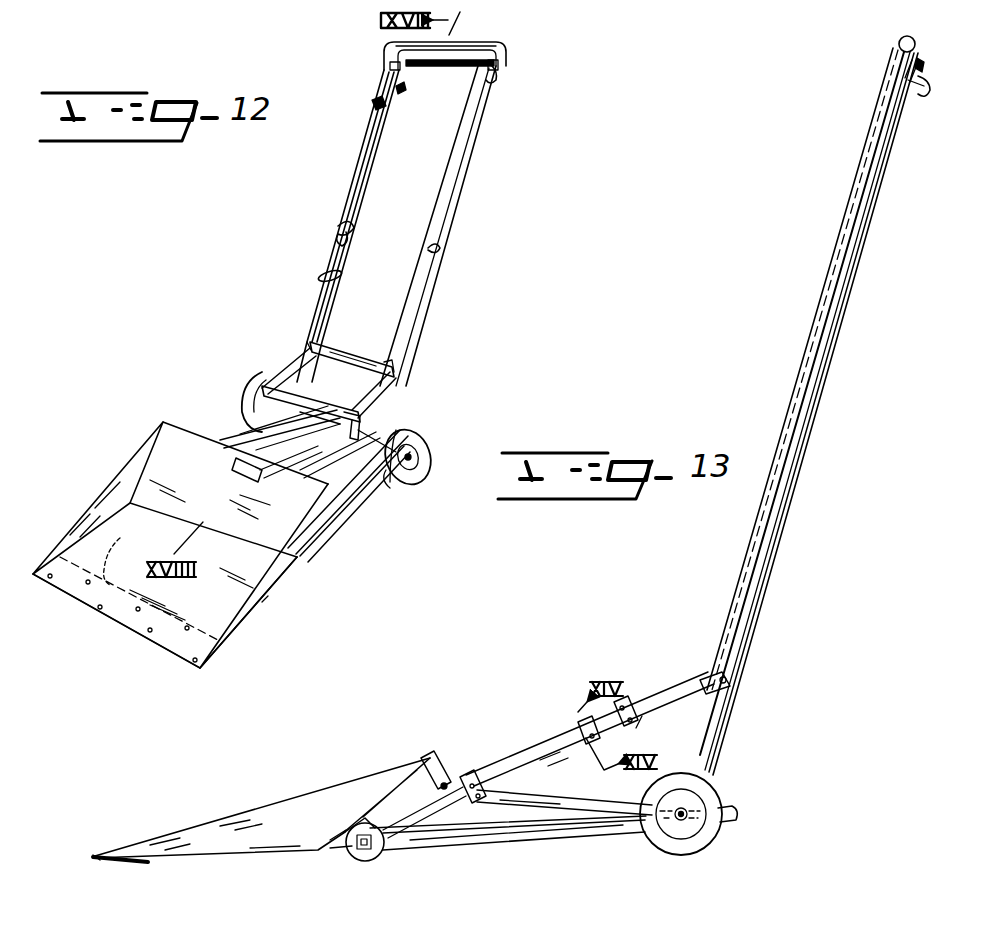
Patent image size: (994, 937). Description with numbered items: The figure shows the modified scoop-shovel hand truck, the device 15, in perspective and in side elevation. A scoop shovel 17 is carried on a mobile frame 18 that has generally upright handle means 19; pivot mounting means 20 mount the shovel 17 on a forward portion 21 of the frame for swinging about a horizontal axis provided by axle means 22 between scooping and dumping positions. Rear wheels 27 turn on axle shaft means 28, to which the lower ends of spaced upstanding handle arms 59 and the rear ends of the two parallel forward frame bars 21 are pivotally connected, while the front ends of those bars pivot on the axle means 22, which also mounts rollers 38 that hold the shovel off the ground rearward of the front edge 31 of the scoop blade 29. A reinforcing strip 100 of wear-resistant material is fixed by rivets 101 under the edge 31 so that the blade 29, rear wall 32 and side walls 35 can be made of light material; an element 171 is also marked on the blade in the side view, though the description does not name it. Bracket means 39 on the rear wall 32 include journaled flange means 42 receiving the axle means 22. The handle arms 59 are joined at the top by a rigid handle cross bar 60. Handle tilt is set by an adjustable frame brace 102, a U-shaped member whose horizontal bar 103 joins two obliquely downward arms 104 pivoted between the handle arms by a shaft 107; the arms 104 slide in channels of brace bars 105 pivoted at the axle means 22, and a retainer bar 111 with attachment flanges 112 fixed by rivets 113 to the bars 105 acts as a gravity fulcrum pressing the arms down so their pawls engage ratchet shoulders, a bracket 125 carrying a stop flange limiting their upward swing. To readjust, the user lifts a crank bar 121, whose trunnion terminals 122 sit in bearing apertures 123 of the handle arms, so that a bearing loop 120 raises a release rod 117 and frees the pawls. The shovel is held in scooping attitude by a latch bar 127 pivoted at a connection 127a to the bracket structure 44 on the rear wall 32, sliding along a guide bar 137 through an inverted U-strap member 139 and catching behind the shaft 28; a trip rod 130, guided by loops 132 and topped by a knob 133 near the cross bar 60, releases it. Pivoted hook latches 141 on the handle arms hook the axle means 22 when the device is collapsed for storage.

In FIG. 12, the device 15 is at (300, 292).
In FIG. 12, the scoop shovel 17 is at (270, 608).
In FIG. 12, the mobile frame 18 is at (386, 474).
In FIG. 13, the mobile frame 18 is at (478, 850).
In FIG. 12, the handle means 19 is at (354, 152).
In FIG. 13, the handle means 19 is at (866, 168).
In FIG. 13, the pivot mounting means 20 is at (340, 852).
In FIG. 13, the forward frame portion 21 is at (530, 838).
In FIG. 13, the axle means 22 is at (380, 850).
In FIG. 12, the wheels 27 is at (248, 396).
In FIG. 13, the wheels 27 is at (700, 846).
In FIG. 12, the axle shaft means 28 is at (380, 416).
In FIG. 13, the axle shaft means 28 is at (690, 816).
In FIG. 12, the scoop blade 29 is at (226, 620).
In FIG. 13, the scoop blade 29 is at (186, 860).
In FIG. 12, the front edge 31 is at (150, 648).
In FIG. 13, the front edge 31 is at (96, 854).
In FIG. 12, the rear wall 32 is at (222, 491).
In FIG. 13, the rear wall 32 is at (402, 784).
In FIG. 12, the side walls 35 is at (120, 466).
In FIG. 13, the side walls 35 is at (352, 790).
In FIG. 13, the rollers 38 is at (366, 866).
In FIG. 13, the bracket means 39 is at (336, 832).
In FIG. 13, the journaled flange means 42 is at (380, 812).
In FIG. 13, the bracket structure 44 is at (446, 758).
In FIG. 12, the handle arms 59 is at (466, 170).
In FIG. 13, the handle arms 59 is at (750, 622).
In FIG. 12, the handle cross bar 60 is at (500, 48).
In FIG. 13, the handle cross bar 60 is at (898, 46).
In FIG. 12, the reinforcing strip 100 is at (170, 542).
In FIG. 13, the reinforcing strip 100 is at (130, 864).
In FIG. 12, the rivets 101 is at (96, 614).
In FIG. 12, the adjustable frame brace 102 is at (288, 368).
In FIG. 13, the adjustable frame brace 102 is at (532, 766).
In FIG. 12, the horizontal bar 103 is at (330, 342).
In FIG. 12, the brace arms 104 is at (290, 364).
In FIG. 13, the brace arms 104 is at (694, 676).
In FIG. 12, the brace bars 105 is at (216, 426).
In FIG. 13, the brace bars 105 is at (520, 776).
In FIG. 12, the shaft 107 is at (348, 356).
In FIG. 12, the retainer bar 111 is at (318, 412).
In FIG. 13, the retainer bar 111 is at (630, 700).
In FIG. 13, the attachment flanges 112 is at (642, 708).
In FIG. 13, the rivets 113 is at (630, 724).
In FIG. 12, the release rod 117 is at (458, 122).
In FIG. 13, the release rod 117 is at (724, 606).
In FIG. 12, the bearing loop 120 is at (502, 76).
In FIG. 13, the bearing loop 120 is at (930, 96).
In FIG. 12, the crank bar 121 is at (424, 66).
In FIG. 13, the crank bar 121 is at (914, 85).
In FIG. 12, the trunnion terminals 122 is at (392, 72).
In FIG. 12, the bearing apertures 123 is at (390, 50).
In FIG. 12, the bracket 125 is at (372, 470).
In FIG. 13, the bracket 125 is at (570, 740).
In FIG. 12, the latch bar 127 is at (240, 460).
In FIG. 13, the latch bar 127 is at (722, 814).
In FIG. 13, the pivotal connection 127a is at (432, 800).
In FIG. 12, the trip rod 130 is at (372, 164).
In FIG. 13, the trip rod 130 is at (742, 686).
In FIG. 12, the guide loops 132 is at (372, 100).
In FIG. 12, the knob 133 is at (402, 98).
In FIG. 13, the knob 133 is at (926, 68).
In FIG. 12, the guide bar 137 is at (292, 466).
In FIG. 13, the guide bar 137 is at (578, 818).
In FIG. 13, the U-strap member 139 is at (490, 790).
In FIG. 12, the hook latches 141 is at (352, 224).
In FIG. 13, the floor panel 171 is at (272, 848).